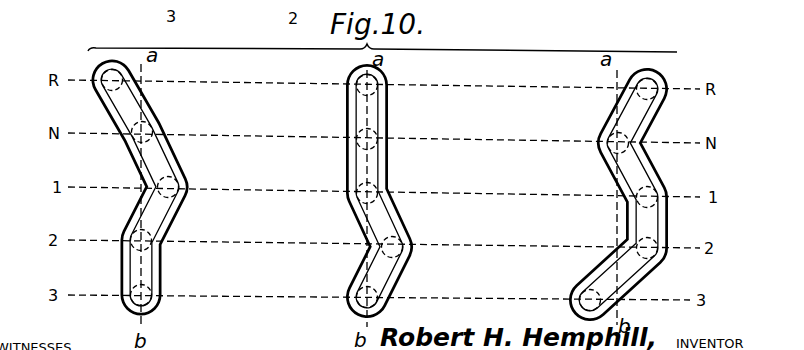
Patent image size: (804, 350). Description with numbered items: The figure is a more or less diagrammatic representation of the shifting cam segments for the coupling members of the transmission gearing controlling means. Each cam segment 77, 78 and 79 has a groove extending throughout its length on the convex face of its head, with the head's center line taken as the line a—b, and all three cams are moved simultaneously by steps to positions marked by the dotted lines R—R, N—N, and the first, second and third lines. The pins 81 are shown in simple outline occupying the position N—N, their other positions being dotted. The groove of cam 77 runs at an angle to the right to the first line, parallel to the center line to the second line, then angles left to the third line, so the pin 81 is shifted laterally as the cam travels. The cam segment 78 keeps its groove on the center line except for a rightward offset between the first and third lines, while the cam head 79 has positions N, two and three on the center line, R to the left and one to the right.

The cam segment 77 is at (617, 99).
The cam segment 78 is at (389, 106).
The cam segment 79 is at (163, 107).
The pin 81 is at (148, 145).